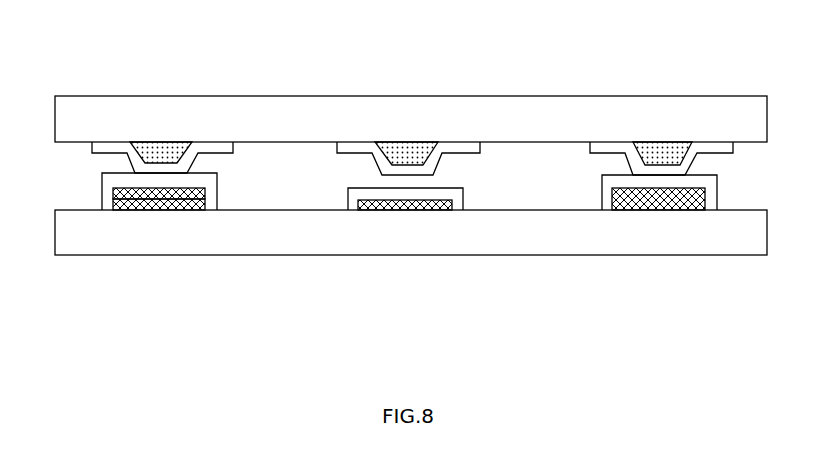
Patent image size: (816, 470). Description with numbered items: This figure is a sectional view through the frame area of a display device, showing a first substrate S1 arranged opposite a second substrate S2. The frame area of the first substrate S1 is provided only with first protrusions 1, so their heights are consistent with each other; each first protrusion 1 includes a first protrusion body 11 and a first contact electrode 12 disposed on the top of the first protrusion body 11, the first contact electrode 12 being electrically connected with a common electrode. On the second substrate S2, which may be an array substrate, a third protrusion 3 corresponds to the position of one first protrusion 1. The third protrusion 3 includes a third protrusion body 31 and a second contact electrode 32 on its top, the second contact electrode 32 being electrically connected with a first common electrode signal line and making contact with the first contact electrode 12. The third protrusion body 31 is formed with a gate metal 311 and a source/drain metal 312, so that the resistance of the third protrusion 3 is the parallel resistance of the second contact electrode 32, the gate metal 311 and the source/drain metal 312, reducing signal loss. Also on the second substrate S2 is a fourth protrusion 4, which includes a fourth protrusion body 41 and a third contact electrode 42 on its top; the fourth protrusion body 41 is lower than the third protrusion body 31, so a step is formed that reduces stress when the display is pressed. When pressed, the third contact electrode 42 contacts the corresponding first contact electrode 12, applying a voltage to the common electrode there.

The first protrusion 1 is at (162, 93).
The first protrusion body 11 is at (158, 160).
The first contact electrode 12 is at (168, 166).
The third protrusion 3 is at (177, 277).
The third protrusion body 31 is at (153, 268).
The gate metal 311 is at (133, 210).
The source/drain metal 312 is at (152, 210).
The second contact electrode 32 is at (187, 180).
The fourth protrusion 4 is at (405, 268).
The fourth protrusion body 41 is at (397, 210).
The third contact electrode 42 is at (425, 208).
The first substrate S1 is at (517, 120).
The second substrate S2 is at (557, 237).